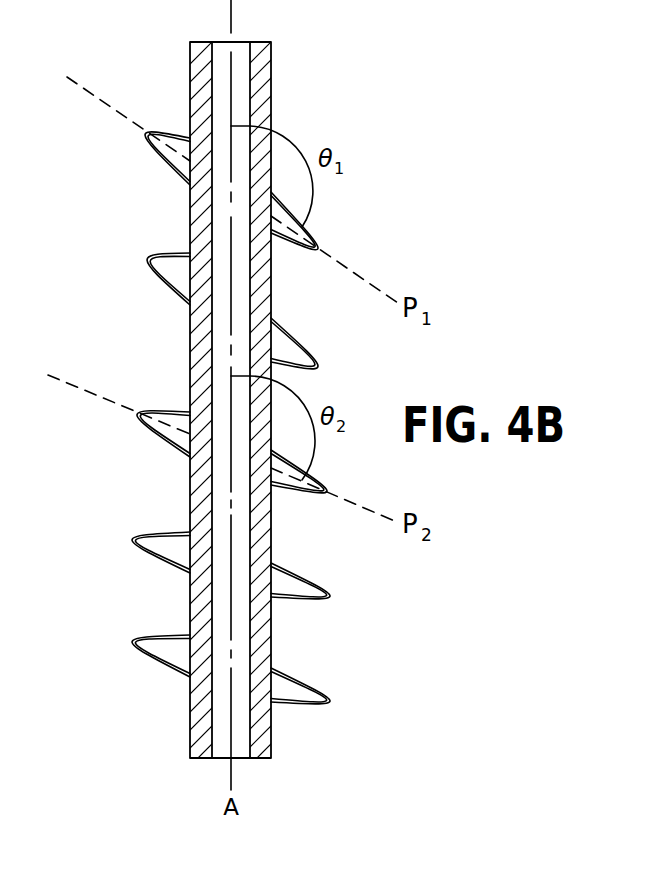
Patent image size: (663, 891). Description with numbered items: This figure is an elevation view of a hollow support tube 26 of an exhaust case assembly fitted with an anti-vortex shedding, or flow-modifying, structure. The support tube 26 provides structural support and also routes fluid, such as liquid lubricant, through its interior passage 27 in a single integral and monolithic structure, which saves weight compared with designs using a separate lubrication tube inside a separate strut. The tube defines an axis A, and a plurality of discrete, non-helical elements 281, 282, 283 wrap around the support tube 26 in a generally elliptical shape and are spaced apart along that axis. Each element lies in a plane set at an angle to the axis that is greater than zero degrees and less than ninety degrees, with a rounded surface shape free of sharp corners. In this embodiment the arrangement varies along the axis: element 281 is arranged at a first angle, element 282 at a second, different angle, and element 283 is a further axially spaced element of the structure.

The support tube 26 is at (271, 62).
The interior passage 27 is at (242, 758).
The element 281 is at (156, 157).
The element 282 is at (141, 428).
The element 283 is at (132, 638).